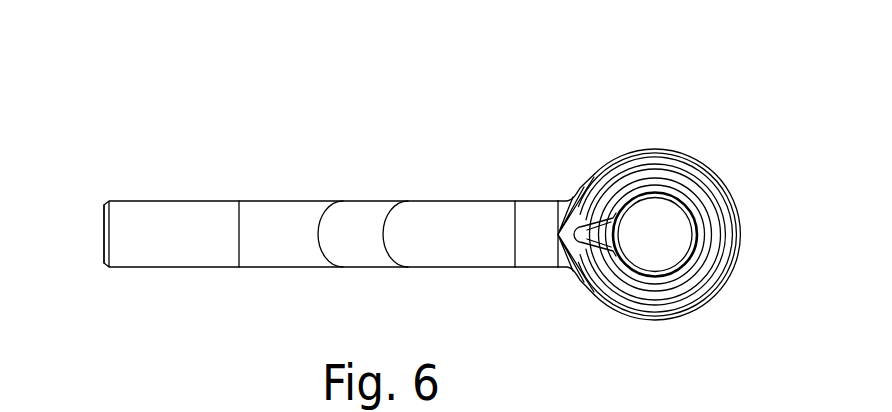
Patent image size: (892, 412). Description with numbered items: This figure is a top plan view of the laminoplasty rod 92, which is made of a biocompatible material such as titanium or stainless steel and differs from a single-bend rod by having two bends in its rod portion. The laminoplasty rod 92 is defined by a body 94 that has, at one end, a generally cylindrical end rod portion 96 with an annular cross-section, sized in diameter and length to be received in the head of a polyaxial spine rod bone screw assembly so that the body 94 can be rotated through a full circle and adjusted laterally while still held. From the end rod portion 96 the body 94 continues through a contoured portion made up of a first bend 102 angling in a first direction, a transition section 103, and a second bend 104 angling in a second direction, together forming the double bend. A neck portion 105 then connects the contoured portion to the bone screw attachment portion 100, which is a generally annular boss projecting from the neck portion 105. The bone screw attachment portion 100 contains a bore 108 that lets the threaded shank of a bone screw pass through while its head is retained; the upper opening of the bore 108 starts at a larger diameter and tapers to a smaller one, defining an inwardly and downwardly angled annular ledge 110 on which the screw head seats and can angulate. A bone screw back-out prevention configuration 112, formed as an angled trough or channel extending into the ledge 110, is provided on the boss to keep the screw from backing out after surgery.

The laminoplasty rod 92 is at (713, 112).
The body 94 is at (500, 267).
The end rod portion 96 is at (170, 255).
The bone screw attachment portion 100 is at (740, 238).
The first bend 102 is at (273, 215).
The transition section 103 is at (372, 257).
The second bend 104 is at (455, 213).
The neck portion 105 is at (532, 215).
The bore 108 is at (633, 205).
The ledge 110 is at (697, 194).
The bone screw back-out prevention configuration 112 is at (593, 294).